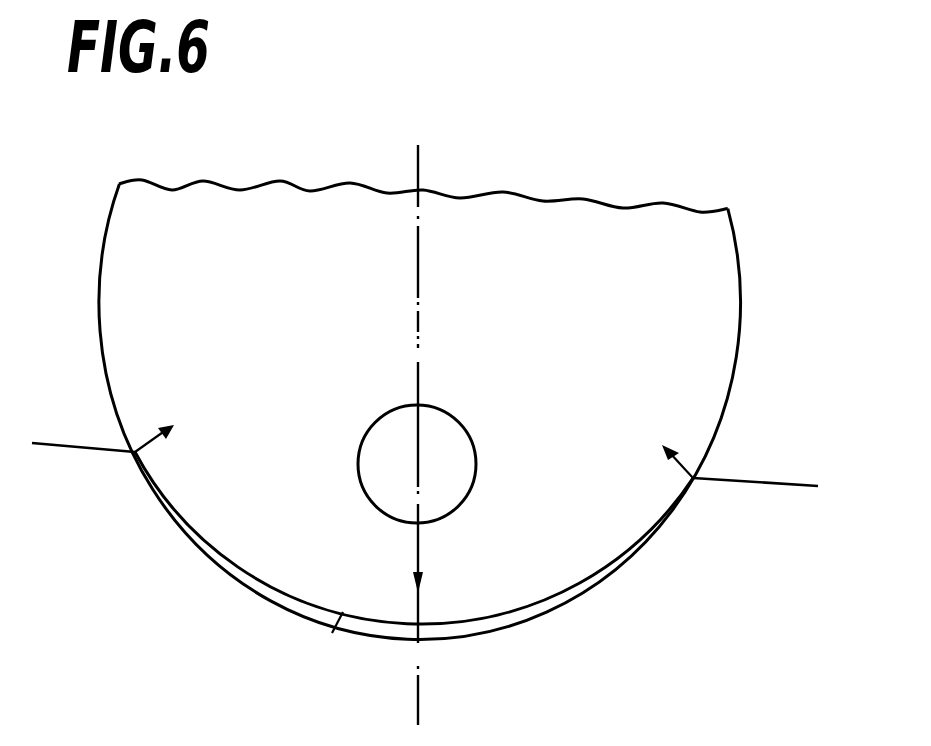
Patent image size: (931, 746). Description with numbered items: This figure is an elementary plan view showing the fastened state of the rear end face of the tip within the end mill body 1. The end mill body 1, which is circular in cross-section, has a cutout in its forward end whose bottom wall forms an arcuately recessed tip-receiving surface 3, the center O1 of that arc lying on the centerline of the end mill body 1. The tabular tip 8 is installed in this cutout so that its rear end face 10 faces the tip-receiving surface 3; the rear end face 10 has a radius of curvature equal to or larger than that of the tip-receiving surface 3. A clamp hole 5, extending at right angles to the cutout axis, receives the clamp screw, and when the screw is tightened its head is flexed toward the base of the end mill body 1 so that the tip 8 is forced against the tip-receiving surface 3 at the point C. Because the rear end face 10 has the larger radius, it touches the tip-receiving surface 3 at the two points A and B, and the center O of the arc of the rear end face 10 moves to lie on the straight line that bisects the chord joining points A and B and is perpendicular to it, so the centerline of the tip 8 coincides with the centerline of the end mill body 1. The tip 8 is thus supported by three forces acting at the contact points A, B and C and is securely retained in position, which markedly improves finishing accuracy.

The end mill body 1 is at (798, 478).
The tip-receiving surface 3 is at (470, 630).
The clamp hole 5 is at (366, 432).
The tabular tip 8 is at (722, 330).
The rear end face of the tip 10 is at (337, 624).
The contact point A is at (133, 456).
The contact point B is at (695, 481).
The contact point C is at (420, 522).
The center of the arc of the rear end face O is at (420, 305).
The center of the arc of the tip-receiving surface O1 is at (420, 335).